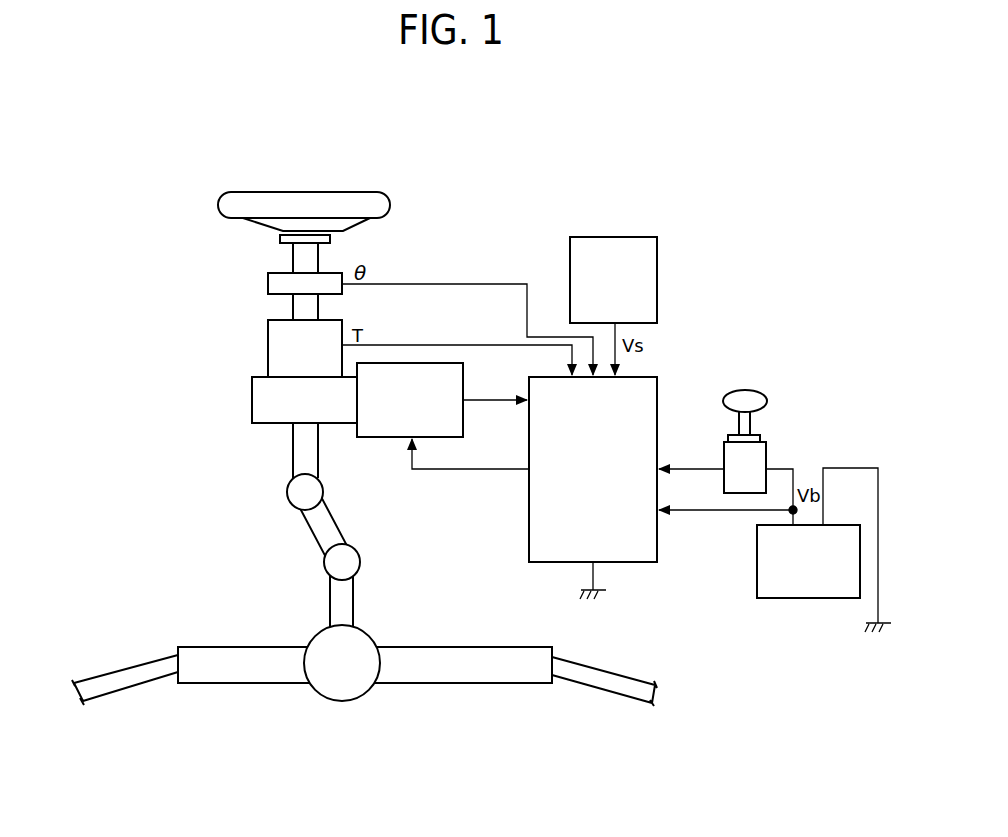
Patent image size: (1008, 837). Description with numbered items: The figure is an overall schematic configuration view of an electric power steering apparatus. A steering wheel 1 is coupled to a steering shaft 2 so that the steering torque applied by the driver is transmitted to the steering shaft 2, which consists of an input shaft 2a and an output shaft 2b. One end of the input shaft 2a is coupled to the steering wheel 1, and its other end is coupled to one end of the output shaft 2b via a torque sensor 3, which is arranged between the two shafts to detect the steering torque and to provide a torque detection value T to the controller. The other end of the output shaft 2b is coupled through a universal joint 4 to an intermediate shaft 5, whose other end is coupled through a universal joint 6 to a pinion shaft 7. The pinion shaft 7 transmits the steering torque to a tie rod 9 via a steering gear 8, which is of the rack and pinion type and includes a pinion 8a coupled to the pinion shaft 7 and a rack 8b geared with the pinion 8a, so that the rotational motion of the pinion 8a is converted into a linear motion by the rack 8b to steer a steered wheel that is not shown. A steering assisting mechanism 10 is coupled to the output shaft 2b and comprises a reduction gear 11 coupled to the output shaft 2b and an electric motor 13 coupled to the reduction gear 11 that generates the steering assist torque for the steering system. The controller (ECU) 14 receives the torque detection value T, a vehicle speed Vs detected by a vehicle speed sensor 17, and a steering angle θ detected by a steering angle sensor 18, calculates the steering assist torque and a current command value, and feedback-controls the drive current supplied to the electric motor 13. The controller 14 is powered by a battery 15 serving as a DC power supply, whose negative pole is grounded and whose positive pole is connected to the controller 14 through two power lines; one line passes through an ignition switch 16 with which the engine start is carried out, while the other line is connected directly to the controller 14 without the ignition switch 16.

The steering wheel 1 is at (330, 190).
The steering shaft 2 is at (277, 253).
The input shaft 2a is at (293, 311).
The output shaft 2b is at (293, 460).
The torque sensor 3 is at (268, 346).
The universal joint 4 is at (287, 496).
The intermediate shaft 5 is at (312, 537).
The universal joint 6 is at (325, 567).
The pinion shaft 7 is at (330, 606).
The steering gear 8 is at (365, 655).
The pinion 8a is at (362, 698).
The rack 8b is at (448, 646).
The tie rod 9 is at (118, 670).
The steering assisting mechanism 10 is at (243, 370).
The reduction gear 11 is at (252, 403).
The electric motor 13 is at (465, 378).
The controller (ECU) 14 is at (658, 393).
The battery 15 is at (777, 600).
The ignition switch 16 is at (767, 452).
The vehicle speed sensor 17 is at (627, 237).
The steering angle sensor 18 is at (268, 285).